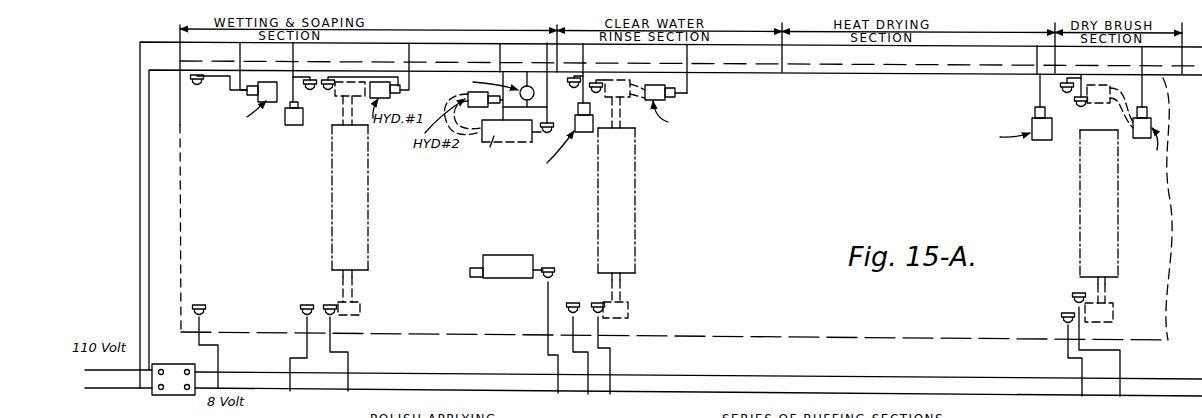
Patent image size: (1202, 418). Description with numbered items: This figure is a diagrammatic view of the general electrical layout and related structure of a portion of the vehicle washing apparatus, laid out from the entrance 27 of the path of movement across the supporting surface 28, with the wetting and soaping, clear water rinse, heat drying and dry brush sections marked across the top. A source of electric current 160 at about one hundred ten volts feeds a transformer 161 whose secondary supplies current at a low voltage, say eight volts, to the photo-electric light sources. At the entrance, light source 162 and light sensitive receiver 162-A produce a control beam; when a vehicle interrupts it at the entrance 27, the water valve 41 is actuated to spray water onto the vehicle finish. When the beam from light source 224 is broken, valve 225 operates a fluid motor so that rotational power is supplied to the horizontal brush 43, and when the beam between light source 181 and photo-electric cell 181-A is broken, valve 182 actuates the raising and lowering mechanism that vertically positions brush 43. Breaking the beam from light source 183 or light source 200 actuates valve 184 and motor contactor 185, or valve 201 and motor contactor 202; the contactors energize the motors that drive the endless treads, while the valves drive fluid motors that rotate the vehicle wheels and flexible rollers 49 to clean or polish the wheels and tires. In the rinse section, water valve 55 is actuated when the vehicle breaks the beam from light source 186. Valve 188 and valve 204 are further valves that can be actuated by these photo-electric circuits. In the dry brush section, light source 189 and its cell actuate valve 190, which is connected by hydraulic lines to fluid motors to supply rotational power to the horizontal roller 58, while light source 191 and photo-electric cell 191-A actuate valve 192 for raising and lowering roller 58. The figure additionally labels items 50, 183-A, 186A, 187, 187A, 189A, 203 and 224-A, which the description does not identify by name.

The entrance of path of movement 27 is at (193, 223).
The supporting surface 28 is at (846, 184).
The water valve 41 is at (276, 103).
The horizontal brush 43 is at (337, 210).
The flexible rollers 49 is at (492, 144).
The clear water rinse section cabinet 50 is at (620, 237).
The water valve 55 is at (594, 128).
The horizontal roller 58 is at (1087, 200).
The source of electric current 160 is at (93, 376).
The transformer 161 is at (177, 388).
The photo-electric light source 162 is at (203, 304).
The light sensitive receiver 162-A is at (193, 90).
The light source 181 is at (327, 305).
The photo-electric cell 181-A is at (327, 79).
The valve 182 is at (313, 102).
The light source 183 is at (551, 267).
The terminal 183-A is at (541, 136).
The valve 184 is at (466, 123).
The motor contactor 185 is at (519, 88).
The light source 186 is at (575, 302).
The terminal 186A is at (581, 78).
The terminal 187 is at (604, 303).
The terminal 187A is at (600, 82).
The valve 188 is at (666, 99).
The light source 189 is at (1062, 316).
The terminal 189A is at (1062, 94).
The valve 190 is at (1030, 134).
The light source 191 is at (1077, 293).
The photo-electric cell 191-A is at (1079, 111).
The valve 192 is at (1150, 117).
The light source 200 is at (290, 369).
The valve 201 is at (268, 390).
The motor contactor 202 is at (662, 408).
The outer conductor rail 203 is at (162, 43).
The valve 204 is at (172, 70).
The light source 224 is at (299, 311).
The terminal 224-A is at (306, 80).
The valve 225 is at (294, 119).